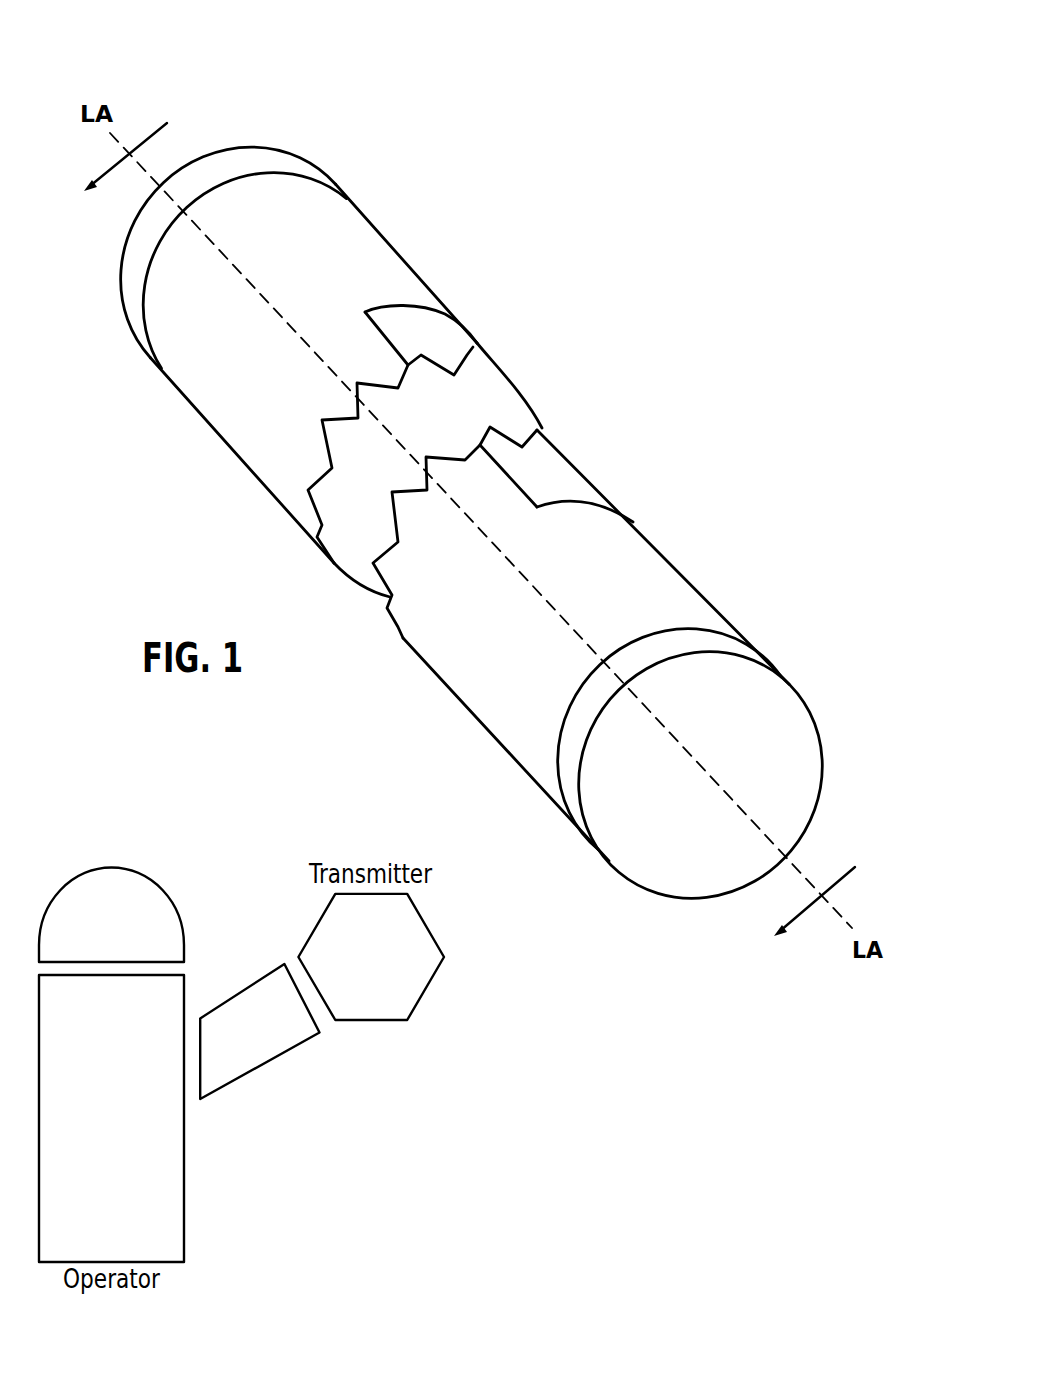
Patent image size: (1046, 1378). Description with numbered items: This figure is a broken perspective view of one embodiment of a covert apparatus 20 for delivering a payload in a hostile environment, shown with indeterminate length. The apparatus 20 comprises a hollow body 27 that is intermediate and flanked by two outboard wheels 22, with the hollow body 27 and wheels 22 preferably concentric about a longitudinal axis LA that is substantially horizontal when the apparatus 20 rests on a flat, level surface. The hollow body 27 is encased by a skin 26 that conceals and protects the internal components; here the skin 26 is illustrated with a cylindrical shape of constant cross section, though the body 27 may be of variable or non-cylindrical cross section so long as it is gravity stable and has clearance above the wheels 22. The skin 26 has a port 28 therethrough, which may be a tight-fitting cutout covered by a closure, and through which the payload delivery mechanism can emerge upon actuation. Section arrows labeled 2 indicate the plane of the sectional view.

The section line of FIG. 2 is at (483, 521).
The covert apparatus 20 is at (530, 236).
The outboard wheels 22 is at (242, 162).
The skin 26 is at (240, 378).
The hollow body 27 is at (348, 265).
The port 28 is at (444, 346).